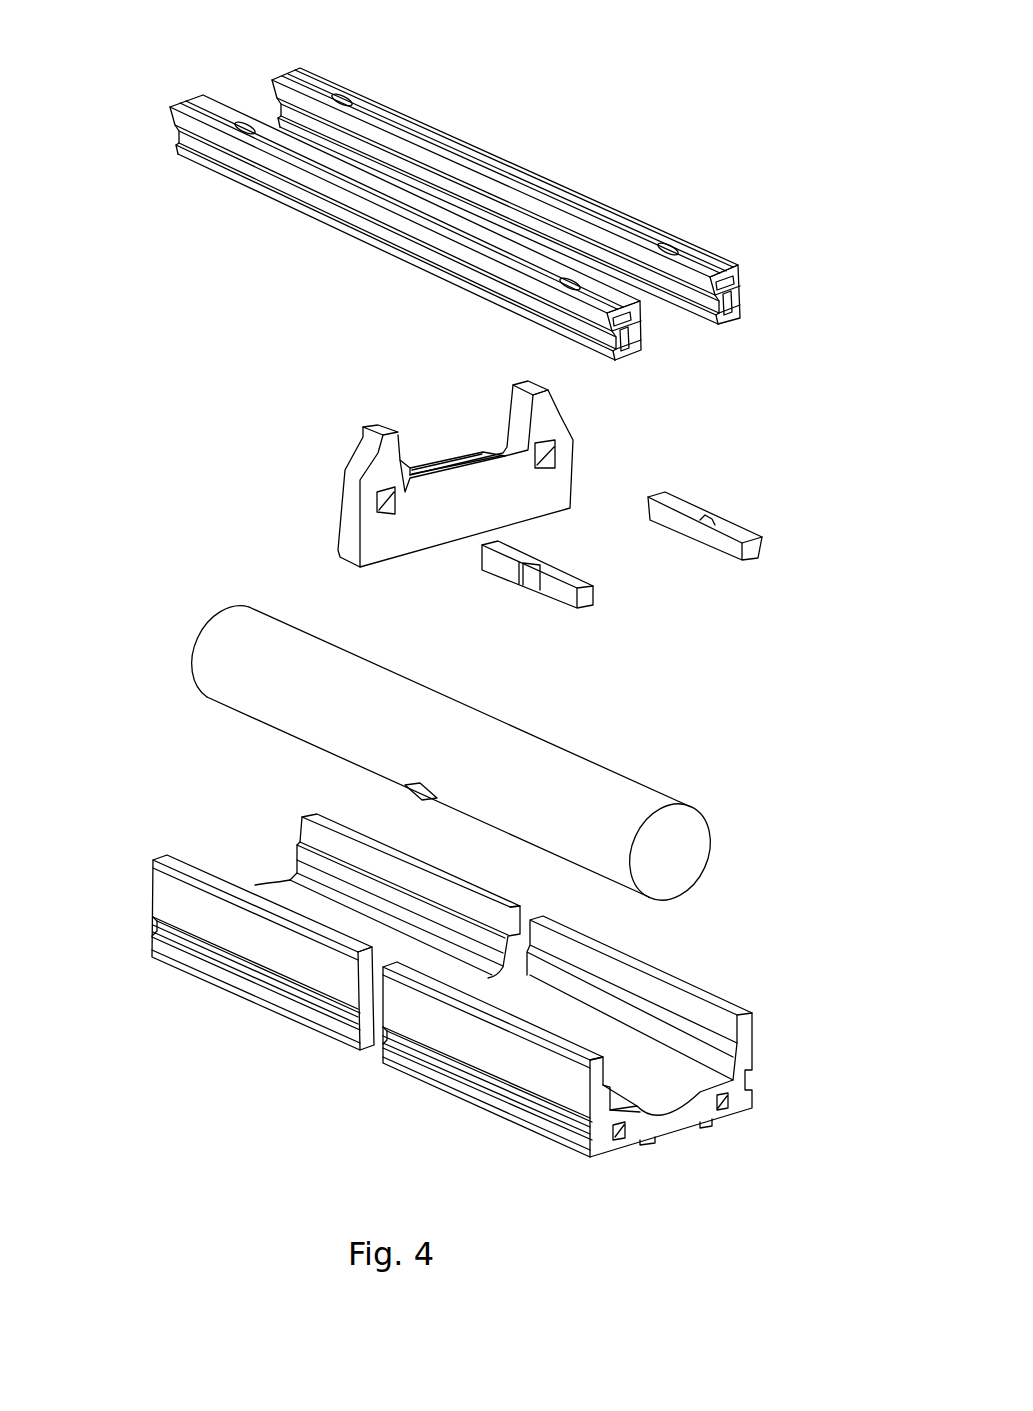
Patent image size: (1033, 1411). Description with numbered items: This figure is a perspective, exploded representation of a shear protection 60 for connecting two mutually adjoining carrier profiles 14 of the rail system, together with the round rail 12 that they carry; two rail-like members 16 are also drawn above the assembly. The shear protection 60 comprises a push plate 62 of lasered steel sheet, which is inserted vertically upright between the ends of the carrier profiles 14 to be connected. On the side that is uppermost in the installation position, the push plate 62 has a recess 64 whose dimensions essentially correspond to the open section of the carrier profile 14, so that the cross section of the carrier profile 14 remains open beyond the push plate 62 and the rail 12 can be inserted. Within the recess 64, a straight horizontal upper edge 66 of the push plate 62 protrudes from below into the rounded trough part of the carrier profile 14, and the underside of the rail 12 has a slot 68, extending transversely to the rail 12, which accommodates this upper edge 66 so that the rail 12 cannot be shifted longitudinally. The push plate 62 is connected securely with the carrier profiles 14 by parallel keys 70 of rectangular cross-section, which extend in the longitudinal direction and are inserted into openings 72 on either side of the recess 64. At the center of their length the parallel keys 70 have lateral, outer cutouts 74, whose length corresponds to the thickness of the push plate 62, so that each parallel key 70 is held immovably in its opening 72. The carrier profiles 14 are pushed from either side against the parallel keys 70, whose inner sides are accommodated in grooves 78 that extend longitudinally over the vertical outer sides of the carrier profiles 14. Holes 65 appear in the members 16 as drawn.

The rail 12 is at (218, 655).
The carrier profile 14 is at (236, 987).
The rail 16 is at (520, 178).
The shear protection 60 is at (198, 367).
The push plate 62 is at (326, 441).
The recess 64 is at (428, 436).
The hole 65 is at (247, 124).
The upper edge 66 is at (452, 462).
The slot 68 is at (412, 793).
The parallel key 70 is at (727, 548).
The opening 72 is at (540, 455).
The cutout 74 is at (712, 518).
The groove 78 is at (158, 937).